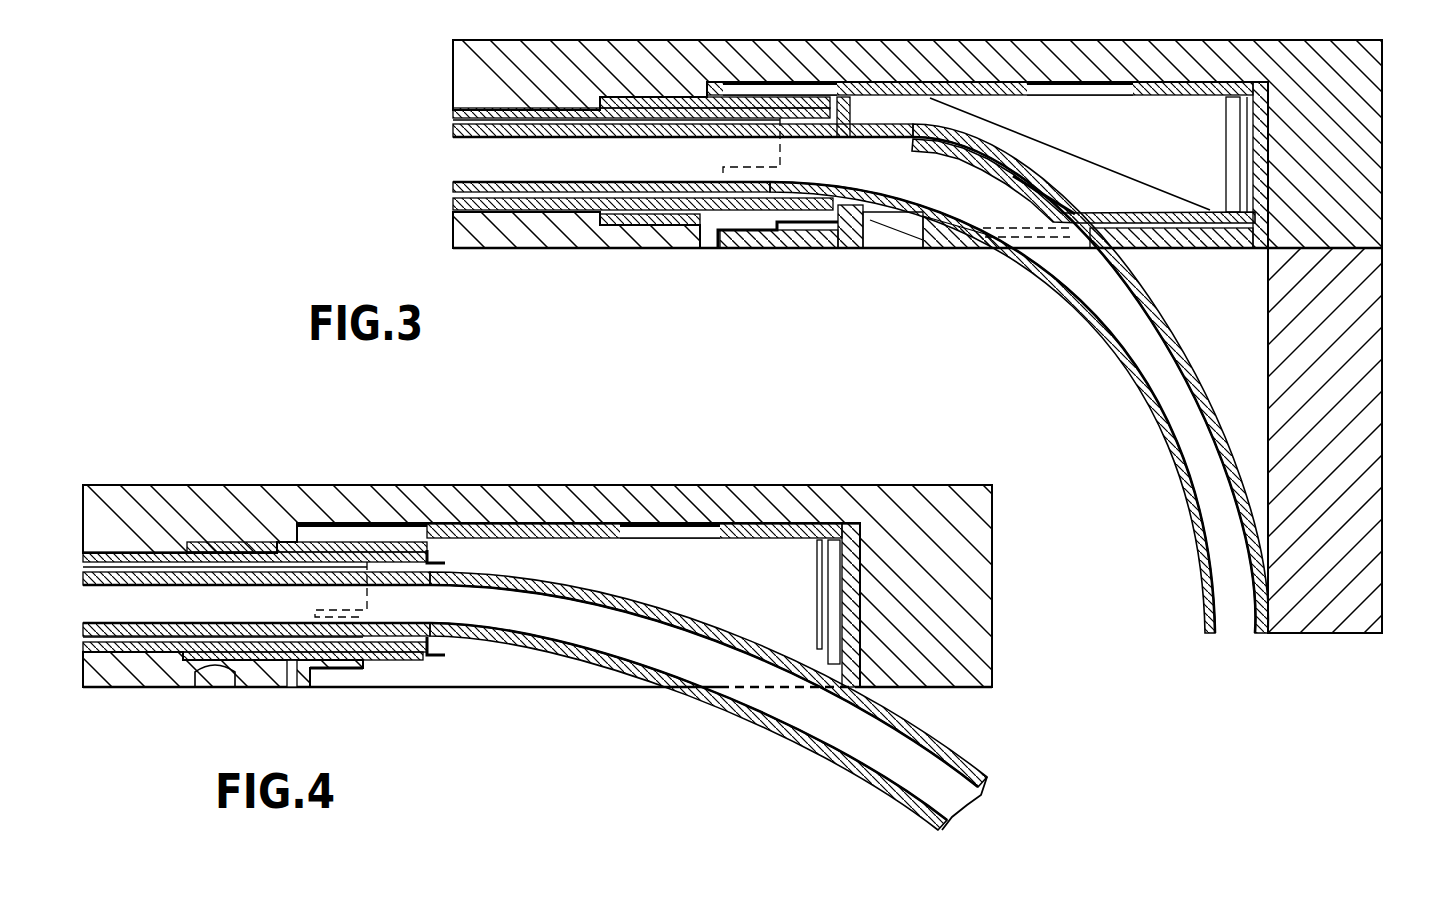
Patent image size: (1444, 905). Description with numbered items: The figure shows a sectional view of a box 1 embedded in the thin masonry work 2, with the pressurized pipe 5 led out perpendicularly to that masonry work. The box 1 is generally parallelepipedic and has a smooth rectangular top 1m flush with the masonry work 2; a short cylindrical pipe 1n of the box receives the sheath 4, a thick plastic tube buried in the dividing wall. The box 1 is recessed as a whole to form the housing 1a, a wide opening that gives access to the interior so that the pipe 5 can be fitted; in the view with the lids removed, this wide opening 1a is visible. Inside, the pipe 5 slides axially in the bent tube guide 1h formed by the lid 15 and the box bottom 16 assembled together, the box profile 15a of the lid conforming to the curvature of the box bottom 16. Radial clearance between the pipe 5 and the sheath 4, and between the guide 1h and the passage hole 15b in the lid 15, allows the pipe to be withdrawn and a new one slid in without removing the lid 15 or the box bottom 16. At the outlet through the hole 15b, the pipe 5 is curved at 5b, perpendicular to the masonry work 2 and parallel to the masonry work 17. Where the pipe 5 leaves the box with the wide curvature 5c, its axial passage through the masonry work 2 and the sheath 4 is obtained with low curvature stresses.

In FIG. 3, the box 1 is at (1140, 96).
In FIG. 4, the box 1 is at (765, 525).
In FIG. 4, the housing 1a is at (484, 690).
In FIG. 3, the bent tube guide 1h is at (866, 250).
In FIG. 3, the smooth rectangular top 1m is at (722, 250).
In FIG. 4, the smooth rectangular top 1m is at (308, 690).
In FIG. 4, the short cylindrical pipe 1n is at (205, 690).
In FIG. 3, the masonry work 2 is at (1200, 78).
In FIG. 4, the masonry work 2 is at (862, 490).
In FIG. 3, the sheath 4 is at (455, 108).
In FIG. 4, the sheath 4 is at (112, 552).
In FIG. 3, the pipe 5 is at (455, 130).
In FIG. 4, the pipe 5 is at (143, 575).
In FIG. 3, the curved portion of pipe 5b is at (1205, 570).
In FIG. 4, the wide curvature of pipe 5c is at (762, 735).
In FIG. 3, the lid 15 is at (792, 250).
In FIG. 3, the box profile 15a is at (888, 218).
In FIG. 3, the passage hole 15b is at (990, 250).
In FIG. 3, the box bottom 16 is at (1172, 228).
In FIG. 3, the masonry work 17 is at (1365, 400).